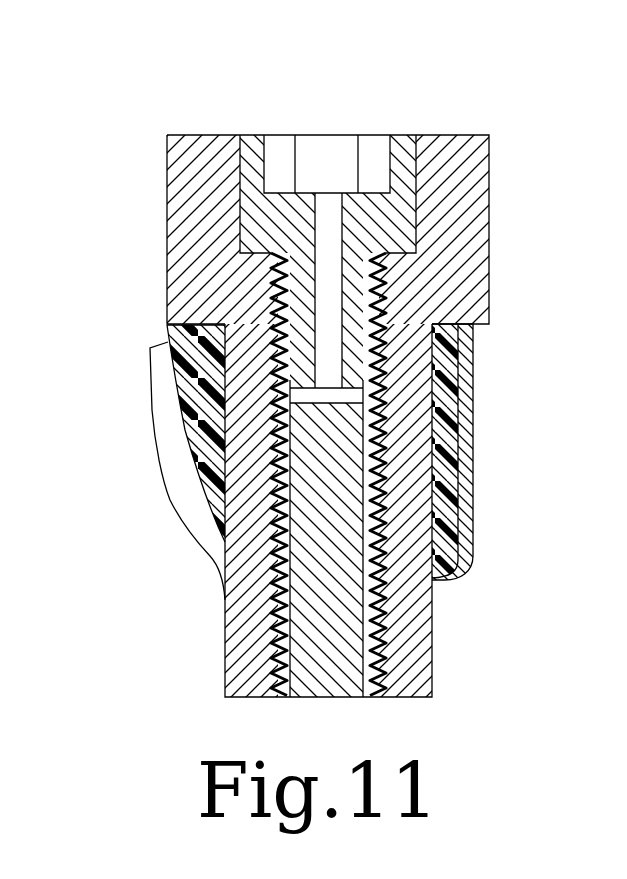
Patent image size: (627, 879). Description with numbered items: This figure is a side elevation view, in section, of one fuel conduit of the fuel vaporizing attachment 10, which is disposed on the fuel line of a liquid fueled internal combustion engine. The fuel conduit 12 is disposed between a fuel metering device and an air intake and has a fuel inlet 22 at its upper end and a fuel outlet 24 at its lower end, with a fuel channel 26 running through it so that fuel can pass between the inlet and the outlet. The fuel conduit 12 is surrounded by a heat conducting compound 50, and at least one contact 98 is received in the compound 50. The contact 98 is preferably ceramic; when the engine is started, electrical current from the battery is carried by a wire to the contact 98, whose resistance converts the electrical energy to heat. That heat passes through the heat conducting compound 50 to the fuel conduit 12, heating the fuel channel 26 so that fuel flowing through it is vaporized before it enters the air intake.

The fuel vaporizing attachment 10 is at (335, 100).
The fuel conduit 12 is at (489, 210).
The fuel inlet 22 is at (145, 173).
The fuel outlet 24 is at (190, 667).
The fuel channel 26 is at (382, 710).
The heat conducting compound 50 is at (186, 501).
The contact 98 is at (465, 412).